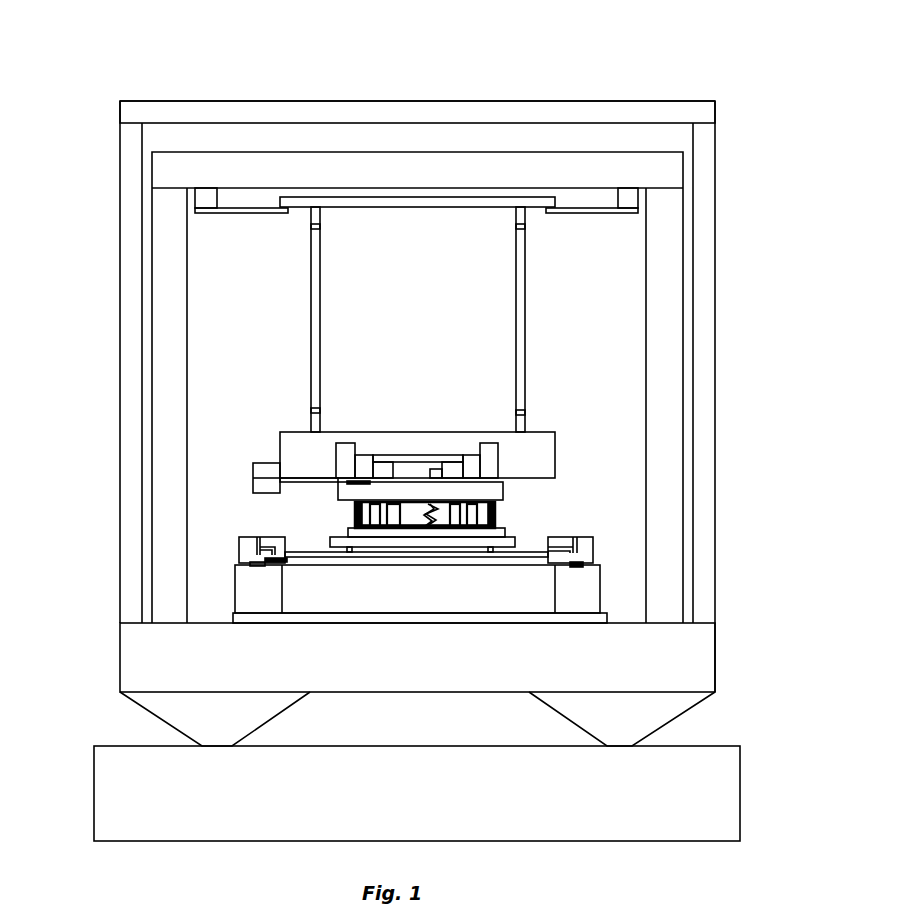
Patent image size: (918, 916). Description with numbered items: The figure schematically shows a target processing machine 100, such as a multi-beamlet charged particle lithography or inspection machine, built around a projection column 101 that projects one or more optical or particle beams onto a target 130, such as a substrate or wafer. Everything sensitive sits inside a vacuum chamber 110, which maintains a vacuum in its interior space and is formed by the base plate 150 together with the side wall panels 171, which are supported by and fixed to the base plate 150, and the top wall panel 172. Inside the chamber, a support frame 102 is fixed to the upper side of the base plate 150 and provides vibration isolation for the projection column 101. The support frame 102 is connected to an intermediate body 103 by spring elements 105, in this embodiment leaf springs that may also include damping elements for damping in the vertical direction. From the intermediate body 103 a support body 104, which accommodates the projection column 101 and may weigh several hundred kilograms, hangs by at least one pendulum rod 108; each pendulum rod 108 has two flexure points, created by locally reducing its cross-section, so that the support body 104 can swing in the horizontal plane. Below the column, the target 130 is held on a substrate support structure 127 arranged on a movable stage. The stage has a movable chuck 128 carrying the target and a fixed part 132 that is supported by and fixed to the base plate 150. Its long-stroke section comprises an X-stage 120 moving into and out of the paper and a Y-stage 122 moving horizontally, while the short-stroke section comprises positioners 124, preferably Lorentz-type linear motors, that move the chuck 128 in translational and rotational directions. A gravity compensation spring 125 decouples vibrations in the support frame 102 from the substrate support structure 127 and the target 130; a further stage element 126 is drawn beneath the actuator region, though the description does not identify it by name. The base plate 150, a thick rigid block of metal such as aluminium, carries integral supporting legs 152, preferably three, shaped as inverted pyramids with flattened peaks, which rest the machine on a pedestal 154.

The target processing machine 100 is at (93, 140).
The vacuum chamber 110 is at (230, 74).
The top wall panel 172 is at (492, 101).
The side wall panels 171 is at (715, 145).
The support frame 102 is at (650, 172).
The spring elements 105 is at (590, 203).
The intermediate body 103 is at (432, 208).
The pendulum rod 108 is at (525, 342).
The support body 104 is at (398, 432).
The projection column 101 is at (442, 455).
The target 130 is at (460, 480).
The substrate support structure 127 is at (500, 505).
The chuck 128 is at (505, 514).
The gravity compensation spring 125 is at (445, 512).
The actuator base 126 is at (520, 532).
The positioners 124 is at (507, 534).
The Y-stage 122 is at (515, 542).
The X-stage 120 is at (573, 565).
The fixed part 132 is at (233, 590).
The base plate 150 is at (715, 680).
The supporting legs 152 is at (678, 718).
The pedestal 154 is at (740, 792).